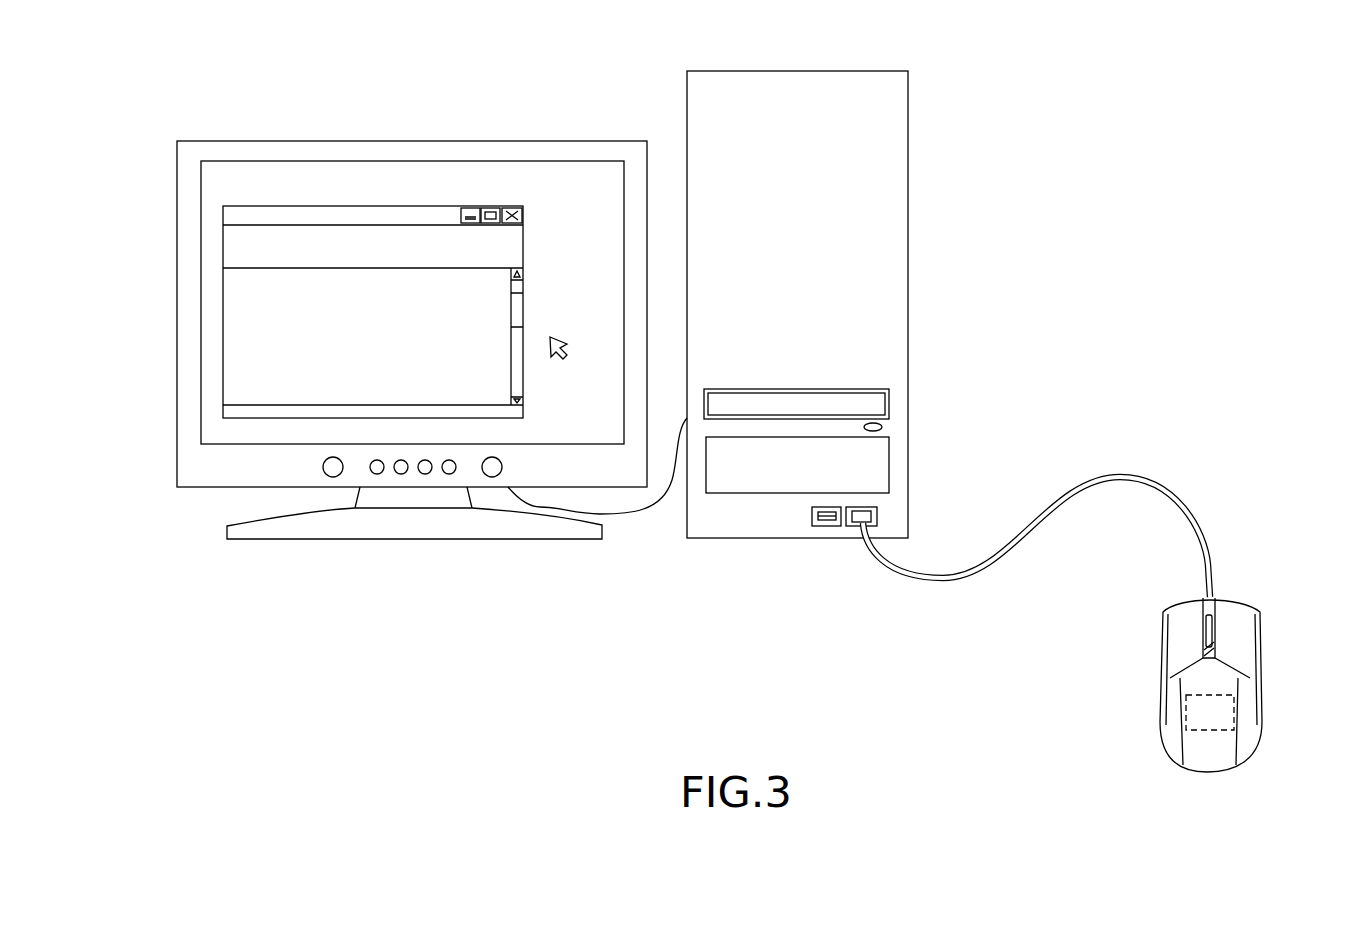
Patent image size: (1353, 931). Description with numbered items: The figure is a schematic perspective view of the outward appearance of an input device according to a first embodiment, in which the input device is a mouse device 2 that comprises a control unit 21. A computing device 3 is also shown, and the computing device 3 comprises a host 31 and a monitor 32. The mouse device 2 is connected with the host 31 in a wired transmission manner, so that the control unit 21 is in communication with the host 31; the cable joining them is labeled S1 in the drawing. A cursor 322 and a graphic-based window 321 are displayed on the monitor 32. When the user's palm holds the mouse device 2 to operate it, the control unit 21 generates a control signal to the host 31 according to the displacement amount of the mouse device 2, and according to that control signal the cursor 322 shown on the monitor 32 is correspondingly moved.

The computing device 3 is at (712, 50).
The host 31 is at (803, 82).
The monitor 32 is at (534, 140).
The graphic-based window 321 is at (352, 245).
The cursor 322 is at (569, 357).
The mouse device 2 is at (1232, 577).
The control unit 21 is at (1206, 712).
The signal / cable S1 is at (1172, 472).